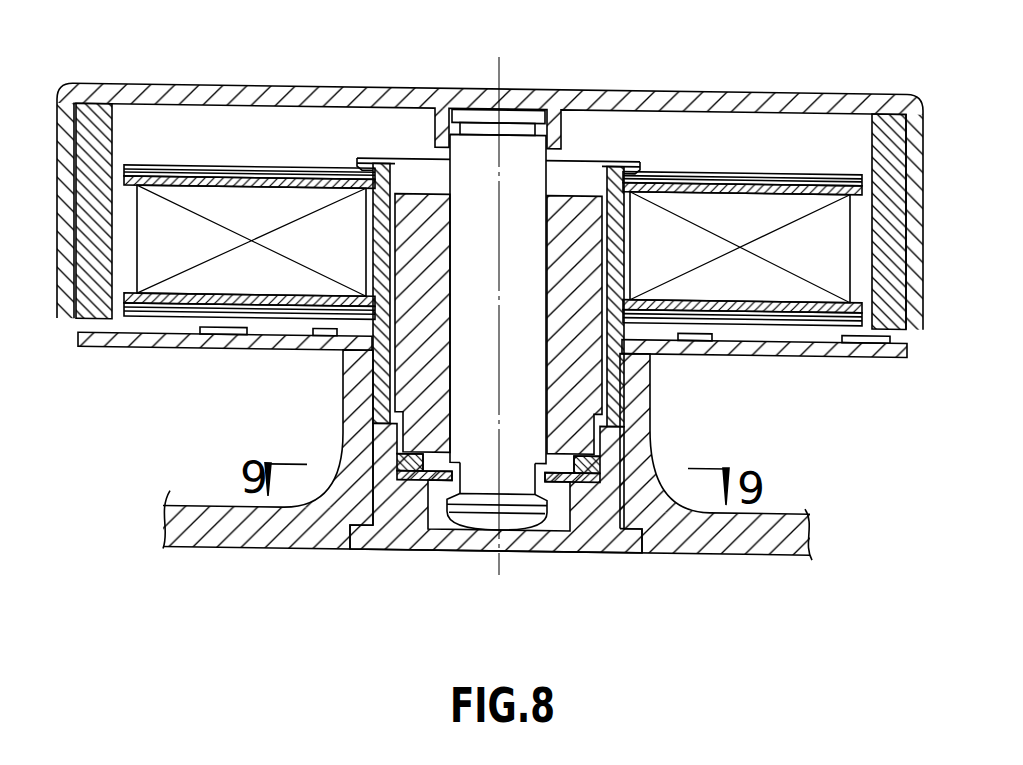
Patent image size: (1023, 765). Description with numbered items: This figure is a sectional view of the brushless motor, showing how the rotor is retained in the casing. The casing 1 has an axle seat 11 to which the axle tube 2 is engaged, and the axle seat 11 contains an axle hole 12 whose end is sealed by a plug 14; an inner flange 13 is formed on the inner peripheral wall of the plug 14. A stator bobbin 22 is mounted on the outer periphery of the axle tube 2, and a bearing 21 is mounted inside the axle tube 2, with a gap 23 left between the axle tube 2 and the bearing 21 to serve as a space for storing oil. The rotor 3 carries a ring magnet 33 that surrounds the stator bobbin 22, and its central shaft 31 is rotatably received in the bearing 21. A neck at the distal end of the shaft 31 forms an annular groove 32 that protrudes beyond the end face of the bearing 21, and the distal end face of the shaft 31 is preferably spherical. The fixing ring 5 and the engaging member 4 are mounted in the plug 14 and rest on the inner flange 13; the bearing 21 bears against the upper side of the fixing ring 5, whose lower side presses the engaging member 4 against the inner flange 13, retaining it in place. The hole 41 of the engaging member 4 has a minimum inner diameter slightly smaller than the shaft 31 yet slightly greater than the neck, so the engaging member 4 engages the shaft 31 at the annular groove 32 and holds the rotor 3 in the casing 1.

The casing 1 is at (797, 508).
The axle tube 2 is at (381, 168).
The rotor 3 is at (889, 101).
The engaging member 4 is at (597, 552).
The fixing ring 5 is at (425, 482).
The axle seat 11 is at (347, 420).
The axle hole 12 is at (621, 372).
The inner flange 13 is at (407, 497).
The plug 14 is at (382, 505).
The bearing 21 is at (571, 203).
The stator bobbin 22 is at (785, 171).
The gap 23 is at (598, 418).
The shaft 31 is at (487, 185).
The annular groove 32 is at (512, 500).
The ring magnet 33 is at (903, 124).
The hole 41 is at (550, 484).